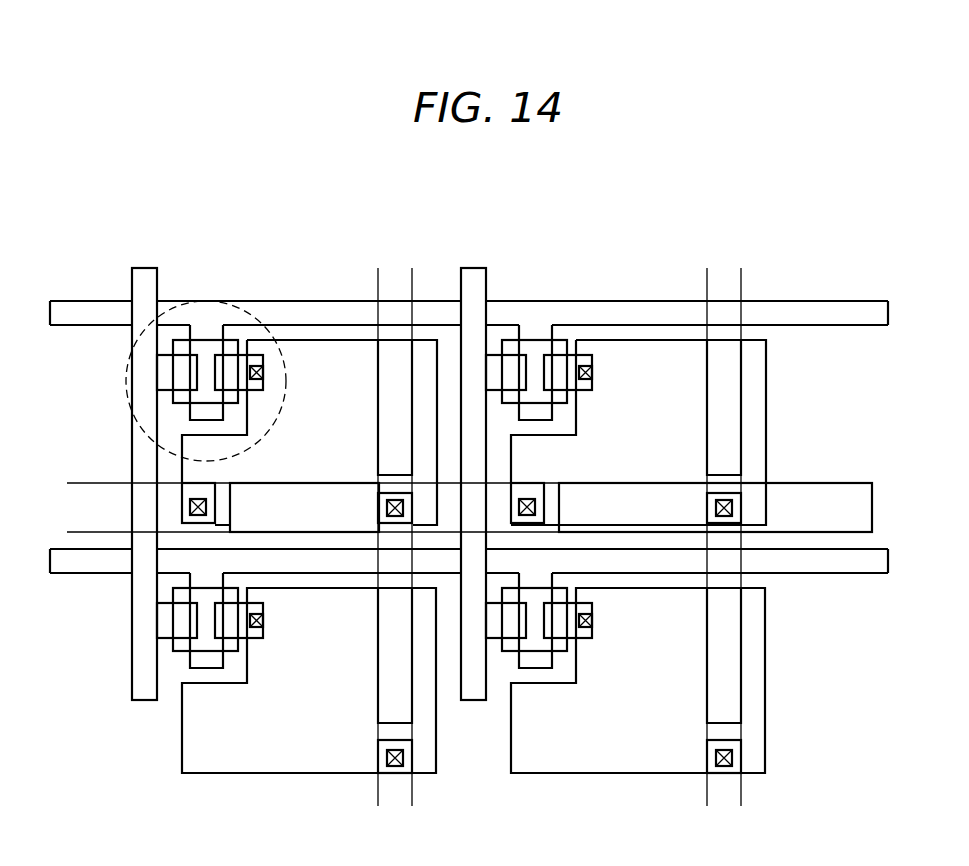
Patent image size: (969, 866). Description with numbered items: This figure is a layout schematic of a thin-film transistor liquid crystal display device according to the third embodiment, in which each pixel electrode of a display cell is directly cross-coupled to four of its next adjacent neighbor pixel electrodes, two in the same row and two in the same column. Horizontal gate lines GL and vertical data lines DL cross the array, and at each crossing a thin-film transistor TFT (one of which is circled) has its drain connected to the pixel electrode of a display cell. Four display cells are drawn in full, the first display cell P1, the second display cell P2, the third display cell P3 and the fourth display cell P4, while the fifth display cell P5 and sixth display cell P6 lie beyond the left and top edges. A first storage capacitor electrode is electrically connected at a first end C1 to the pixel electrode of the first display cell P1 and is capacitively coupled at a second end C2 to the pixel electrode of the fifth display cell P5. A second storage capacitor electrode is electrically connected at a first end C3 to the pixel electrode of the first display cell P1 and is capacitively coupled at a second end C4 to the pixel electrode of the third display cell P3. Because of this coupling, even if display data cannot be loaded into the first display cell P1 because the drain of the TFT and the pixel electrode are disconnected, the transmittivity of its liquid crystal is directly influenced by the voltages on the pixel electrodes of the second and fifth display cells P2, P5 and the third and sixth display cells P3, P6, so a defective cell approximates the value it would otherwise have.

The gate line GL is at (72, 308).
The data line DL is at (147, 279).
The thin-film transistor TFT is at (238, 301).
The first display cell P1 is at (335, 408).
The second display cell P2 is at (673, 456).
The third display cell P3 is at (311, 720).
The fourth display cell P4 is at (672, 722).
The fifth display cell P5 is at (97, 438).
The sixth display cell P6 is at (327, 225).
The first end of first storage capacitor electrode C1 is at (196, 490).
The second end of first storage capacitor electrode C2 is at (262, 490).
The first end of second storage capacitor electrode C3 is at (387, 493).
The second end of second storage capacitor electrode C4 is at (387, 360).